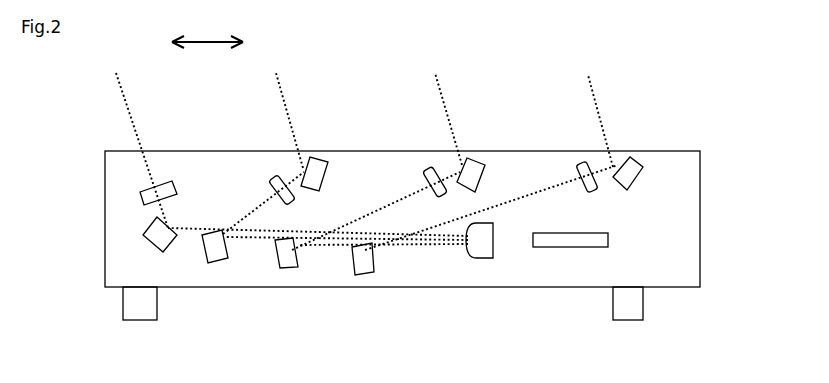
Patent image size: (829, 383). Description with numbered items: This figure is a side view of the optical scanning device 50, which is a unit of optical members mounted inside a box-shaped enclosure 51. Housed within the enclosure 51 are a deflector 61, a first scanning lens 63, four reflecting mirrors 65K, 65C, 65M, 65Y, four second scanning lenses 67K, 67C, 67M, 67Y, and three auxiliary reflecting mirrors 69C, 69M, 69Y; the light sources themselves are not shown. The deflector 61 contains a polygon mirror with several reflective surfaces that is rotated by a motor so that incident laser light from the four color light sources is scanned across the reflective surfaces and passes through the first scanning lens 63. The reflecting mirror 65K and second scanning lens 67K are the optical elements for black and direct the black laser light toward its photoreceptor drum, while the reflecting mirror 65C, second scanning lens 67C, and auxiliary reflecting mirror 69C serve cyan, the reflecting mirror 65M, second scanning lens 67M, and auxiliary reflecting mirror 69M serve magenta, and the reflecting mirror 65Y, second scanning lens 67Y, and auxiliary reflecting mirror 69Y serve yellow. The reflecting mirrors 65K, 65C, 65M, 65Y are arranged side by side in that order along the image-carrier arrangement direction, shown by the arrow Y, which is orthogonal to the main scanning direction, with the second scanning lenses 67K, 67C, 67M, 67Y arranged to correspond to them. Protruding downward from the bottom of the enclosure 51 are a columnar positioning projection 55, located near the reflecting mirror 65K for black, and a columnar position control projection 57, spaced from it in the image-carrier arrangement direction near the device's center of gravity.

The optical scanning device 50 is at (507, 148).
The enclosure 51 is at (354, 148).
The positioning projection 55 is at (143, 312).
The position control projection 57 is at (625, 308).
The deflector 61 is at (593, 242).
The first scanning lens 63 is at (482, 250).
The reflecting mirror 65K is at (143, 233).
The reflecting mirror 65C is at (220, 262).
The reflecting mirror 65M is at (290, 268).
The reflecting mirror 65Y is at (365, 275).
The second scanning lens 67K is at (160, 193).
The second scanning lens 67C is at (277, 175).
The second scanning lens 67M is at (428, 170).
The second scanning lens 67Y is at (583, 162).
The auxiliary reflecting mirror 69C is at (318, 160).
The auxiliary reflecting mirror 69M is at (477, 160).
The auxiliary reflecting mirror 69Y is at (630, 157).
The image-carrier arrangement direction Y is at (205, 48).